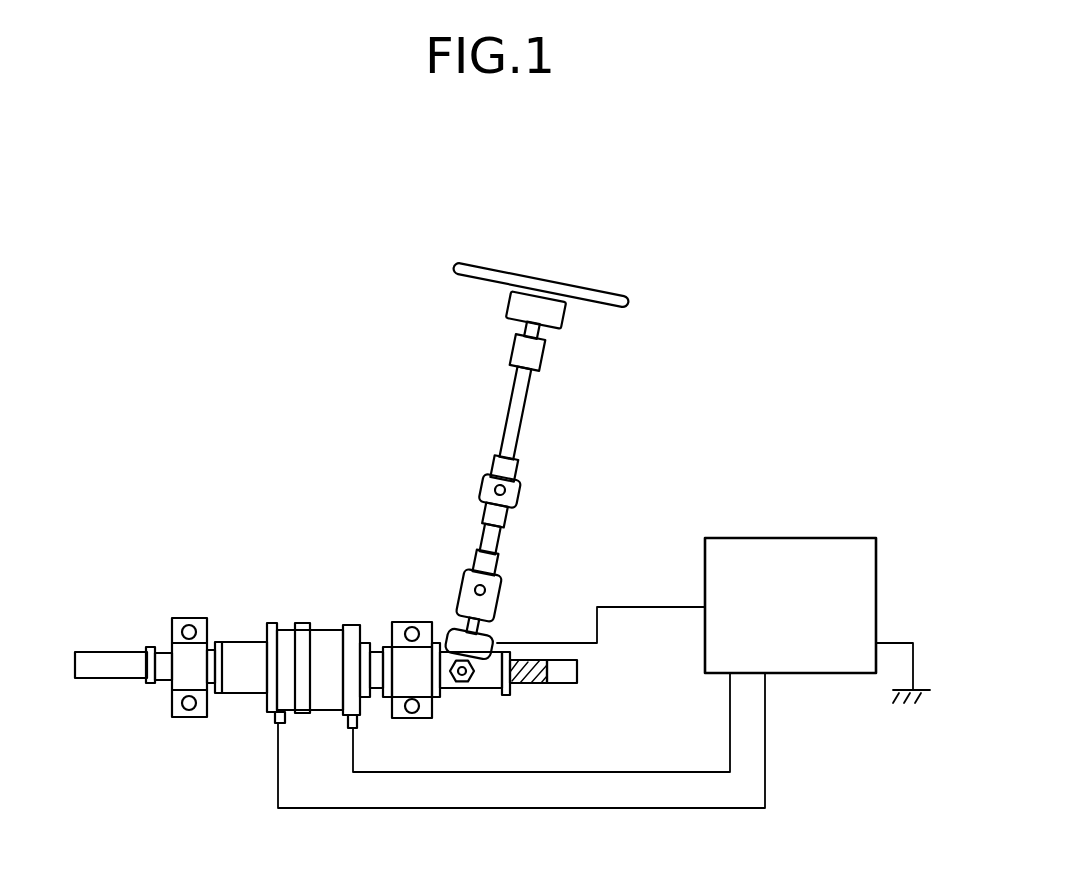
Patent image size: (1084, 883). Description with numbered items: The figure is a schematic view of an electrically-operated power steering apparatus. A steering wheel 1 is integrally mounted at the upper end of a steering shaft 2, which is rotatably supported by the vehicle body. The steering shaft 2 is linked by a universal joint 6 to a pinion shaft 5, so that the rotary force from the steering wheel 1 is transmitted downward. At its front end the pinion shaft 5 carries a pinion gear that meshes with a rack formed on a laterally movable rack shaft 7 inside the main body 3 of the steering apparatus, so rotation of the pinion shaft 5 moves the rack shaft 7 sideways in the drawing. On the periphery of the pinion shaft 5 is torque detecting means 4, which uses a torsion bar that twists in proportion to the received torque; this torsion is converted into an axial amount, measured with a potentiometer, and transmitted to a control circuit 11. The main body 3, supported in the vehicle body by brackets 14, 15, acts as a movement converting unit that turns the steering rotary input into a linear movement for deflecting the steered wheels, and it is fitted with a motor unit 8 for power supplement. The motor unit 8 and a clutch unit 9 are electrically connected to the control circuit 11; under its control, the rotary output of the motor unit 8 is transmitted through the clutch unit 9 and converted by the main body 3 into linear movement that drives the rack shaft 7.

The steering wheel 1 is at (540, 287).
The steering shaft 2 is at (500, 405).
The main body 3 is at (317, 626).
The torque detecting means 4 is at (492, 642).
The pinion shaft 5 is at (487, 628).
The universal joint 6 is at (497, 562).
The rack shaft 7 is at (572, 672).
The motor unit 8 is at (302, 623).
The clutch unit 9 is at (270, 623).
The control circuit 11 is at (786, 548).
The bracket 14 is at (185, 618).
The bracket 15 is at (412, 622).